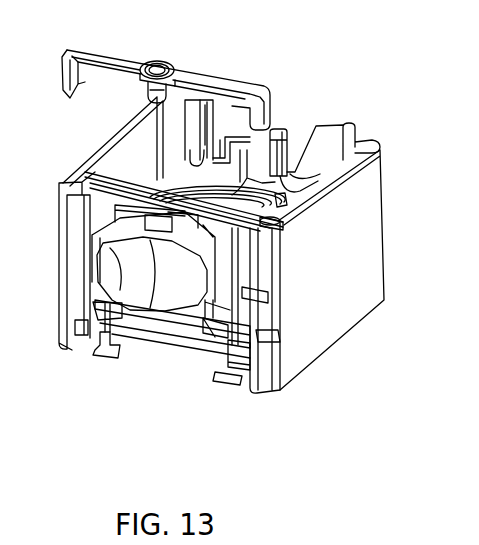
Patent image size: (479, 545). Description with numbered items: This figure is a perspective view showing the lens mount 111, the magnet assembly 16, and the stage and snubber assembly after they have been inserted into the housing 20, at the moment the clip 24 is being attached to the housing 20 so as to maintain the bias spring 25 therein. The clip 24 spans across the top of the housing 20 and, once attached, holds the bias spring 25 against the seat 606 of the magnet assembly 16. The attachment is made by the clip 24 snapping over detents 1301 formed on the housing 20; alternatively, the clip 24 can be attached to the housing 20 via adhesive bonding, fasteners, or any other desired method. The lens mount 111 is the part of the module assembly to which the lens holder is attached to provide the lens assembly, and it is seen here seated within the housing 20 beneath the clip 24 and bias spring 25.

The clip 24 is at (212, 79).
The bias spring 25 is at (143, 95).
The lens mount 111 is at (278, 137).
The housing 20 is at (383, 222).
The detents 1301 is at (63, 202).
The seat 606 is at (130, 238).
The magnet assembly 16 is at (164, 366).